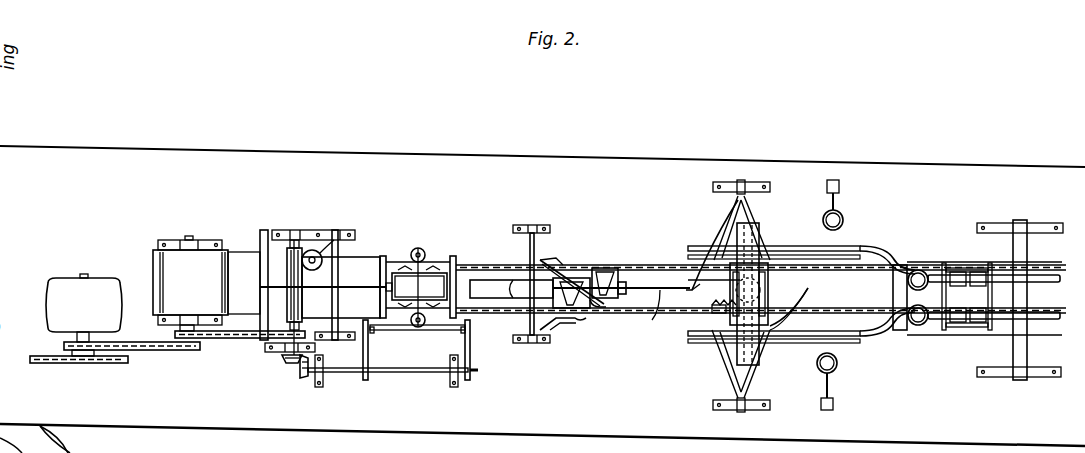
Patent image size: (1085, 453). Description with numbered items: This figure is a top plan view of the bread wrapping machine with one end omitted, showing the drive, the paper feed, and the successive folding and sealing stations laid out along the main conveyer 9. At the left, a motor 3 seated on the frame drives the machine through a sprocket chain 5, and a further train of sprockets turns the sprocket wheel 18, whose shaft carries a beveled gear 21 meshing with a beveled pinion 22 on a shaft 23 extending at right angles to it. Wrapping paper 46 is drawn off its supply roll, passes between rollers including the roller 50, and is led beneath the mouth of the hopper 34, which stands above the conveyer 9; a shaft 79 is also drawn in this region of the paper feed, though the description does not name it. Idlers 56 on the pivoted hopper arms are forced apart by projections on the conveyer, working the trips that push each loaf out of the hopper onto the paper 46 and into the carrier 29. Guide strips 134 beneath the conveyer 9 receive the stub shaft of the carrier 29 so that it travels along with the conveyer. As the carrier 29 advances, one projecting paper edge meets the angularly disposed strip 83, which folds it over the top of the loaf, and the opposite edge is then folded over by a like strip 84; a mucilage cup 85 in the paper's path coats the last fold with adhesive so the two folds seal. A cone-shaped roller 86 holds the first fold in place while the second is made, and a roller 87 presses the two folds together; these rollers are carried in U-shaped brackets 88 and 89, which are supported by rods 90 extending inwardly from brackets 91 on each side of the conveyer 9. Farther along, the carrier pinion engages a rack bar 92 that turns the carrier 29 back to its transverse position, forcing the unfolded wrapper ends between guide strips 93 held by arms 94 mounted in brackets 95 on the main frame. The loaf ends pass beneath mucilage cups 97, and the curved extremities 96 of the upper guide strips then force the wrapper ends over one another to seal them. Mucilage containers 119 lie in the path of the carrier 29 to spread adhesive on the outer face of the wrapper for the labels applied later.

The motor 3 is at (89, 296).
The sprocket chain 5 is at (148, 350).
The wrapping paper 46 is at (206, 280).
The sprocket wheel 18 is at (258, 337).
The mucilage cup 85 is at (314, 250).
The roller 50 is at (302, 298).
The shaft 79 is at (340, 288).
The beveled gear 21 is at (288, 365).
The beveled pinion 22 is at (304, 380).
The shaft 23 is at (387, 373).
The idlers 56 is at (414, 250).
The hopper 34 is at (425, 278).
The main conveyer 9 is at (660, 265).
The guide strips 134 is at (580, 316).
The rods 90 is at (530, 246).
The brackets 91 is at (546, 226).
The strip 83 is at (570, 308).
The U-shaped bracket 89 is at (596, 268).
The strip 84 is at (556, 264).
The roller 87 is at (623, 280).
The cone-shaped roller 86 is at (600, 308).
The U-shaped bracket 88 is at (553, 322).
The arms 94 is at (730, 212).
The brackets 95 is at (713, 404).
The carrier 29 is at (765, 294).
The guide strips 93 is at (793, 248).
The curved extremities 96 is at (876, 258).
The mucilage cups 97 is at (840, 222).
The rack bar 92 is at (716, 312).
The mucilage containers 119 is at (922, 272).